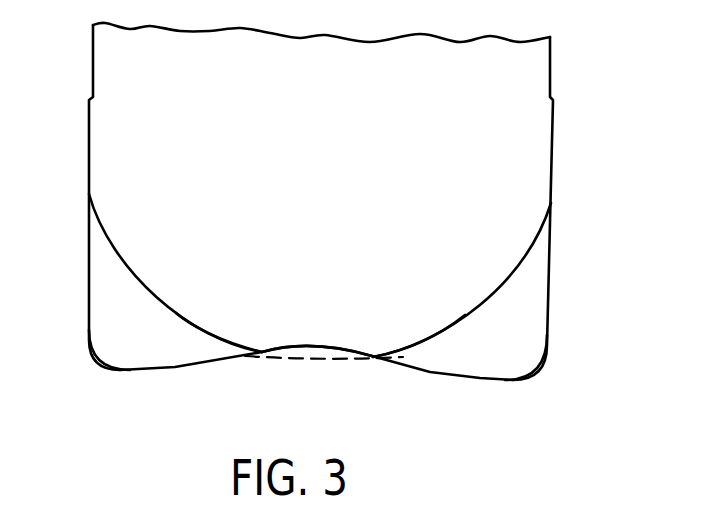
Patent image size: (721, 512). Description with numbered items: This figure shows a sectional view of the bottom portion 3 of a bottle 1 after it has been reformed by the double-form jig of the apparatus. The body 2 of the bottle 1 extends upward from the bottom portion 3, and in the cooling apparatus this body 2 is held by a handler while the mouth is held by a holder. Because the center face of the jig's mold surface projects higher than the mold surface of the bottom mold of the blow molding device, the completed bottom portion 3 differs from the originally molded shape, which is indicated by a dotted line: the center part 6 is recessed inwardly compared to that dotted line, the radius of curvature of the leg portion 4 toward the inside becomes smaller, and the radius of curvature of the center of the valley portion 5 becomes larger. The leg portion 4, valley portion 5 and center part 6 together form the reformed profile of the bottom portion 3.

The bottle 1 is at (566, 66).
The body 2 is at (91, 44).
The bottom portion 3 is at (559, 305).
The leg portion 4 is at (120, 371).
The valley portion 5 is at (196, 325).
The center part 6 is at (307, 347).